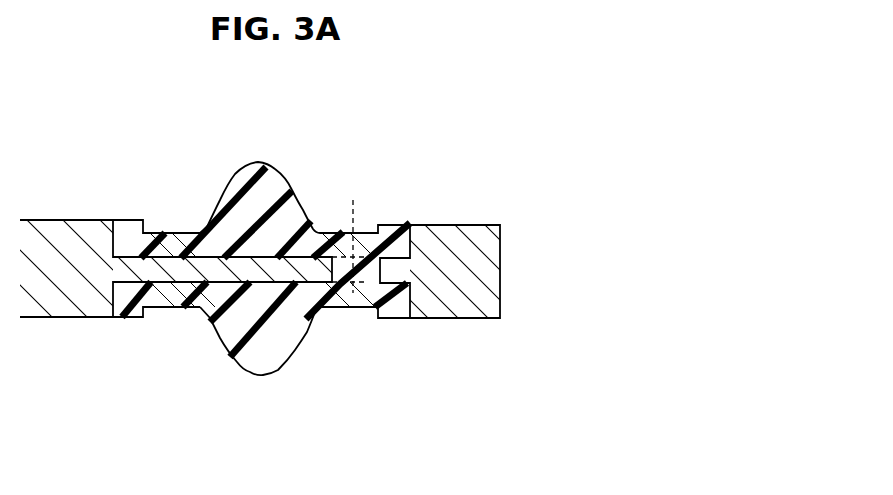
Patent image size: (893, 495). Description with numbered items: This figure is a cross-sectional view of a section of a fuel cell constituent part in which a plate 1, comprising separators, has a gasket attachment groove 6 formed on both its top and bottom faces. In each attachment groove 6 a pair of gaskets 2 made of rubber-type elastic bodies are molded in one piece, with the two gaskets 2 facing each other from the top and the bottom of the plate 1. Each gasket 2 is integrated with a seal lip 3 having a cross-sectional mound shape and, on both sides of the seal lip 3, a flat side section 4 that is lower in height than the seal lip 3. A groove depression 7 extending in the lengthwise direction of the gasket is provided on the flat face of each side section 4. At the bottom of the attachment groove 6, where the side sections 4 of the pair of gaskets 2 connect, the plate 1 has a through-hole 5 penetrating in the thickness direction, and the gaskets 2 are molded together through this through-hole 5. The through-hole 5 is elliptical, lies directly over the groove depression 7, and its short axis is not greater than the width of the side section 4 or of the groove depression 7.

The plate attachment part 1 is at (485, 262).
The gasket 2 is at (240, 185).
The seal lip 3 is at (259, 185).
The side section 4 is at (130, 232).
The through-hole 5 is at (353, 200).
The gasket attachment groove 6 is at (291, 245).
The groove depression 7 is at (175, 232).